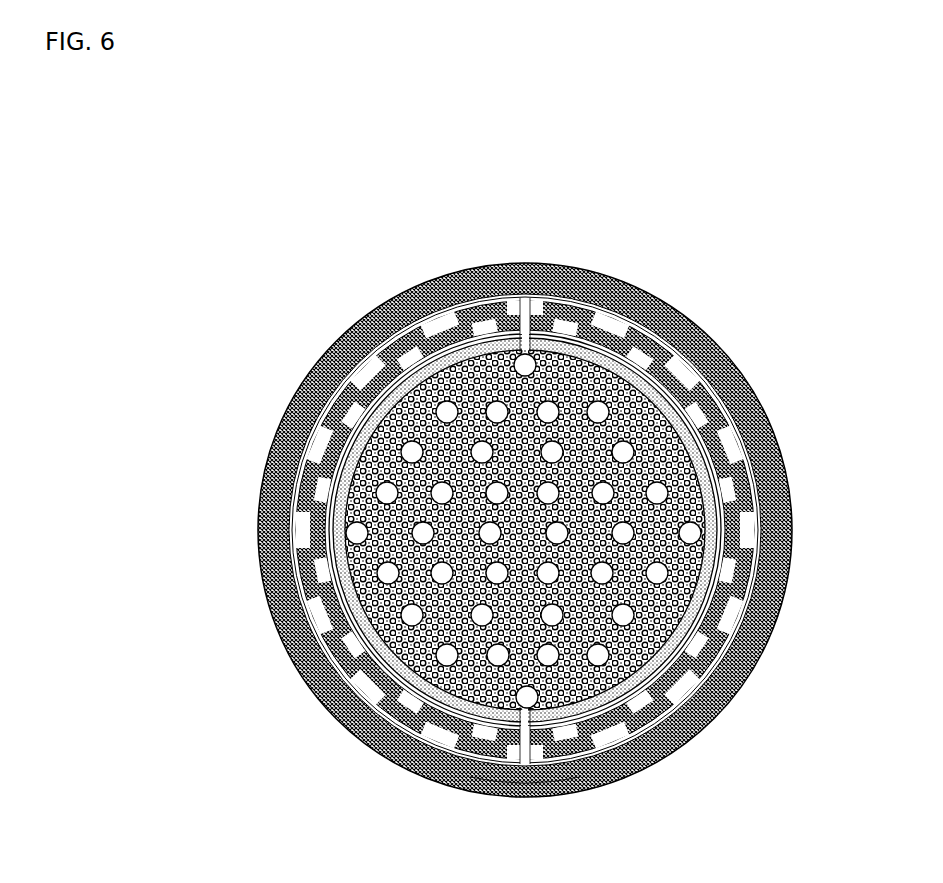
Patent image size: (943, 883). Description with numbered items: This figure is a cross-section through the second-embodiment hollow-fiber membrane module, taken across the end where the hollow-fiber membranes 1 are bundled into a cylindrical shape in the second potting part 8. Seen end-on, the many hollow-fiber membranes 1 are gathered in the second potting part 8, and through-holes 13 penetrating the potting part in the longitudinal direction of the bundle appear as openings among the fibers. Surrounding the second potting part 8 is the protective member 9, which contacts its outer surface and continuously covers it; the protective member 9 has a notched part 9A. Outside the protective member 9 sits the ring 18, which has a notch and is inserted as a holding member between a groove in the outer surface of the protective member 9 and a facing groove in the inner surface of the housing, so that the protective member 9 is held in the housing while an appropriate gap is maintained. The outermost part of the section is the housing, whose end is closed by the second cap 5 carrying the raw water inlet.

The hollow-fiber membrane 1 is at (663, 303).
The second cap 5 is at (730, 380).
The second potting part 8 is at (590, 347).
The protective member 9 is at (384, 350).
The notched part 9A is at (527, 337).
The through-hole 13 is at (363, 407).
The ring 18 is at (492, 788).